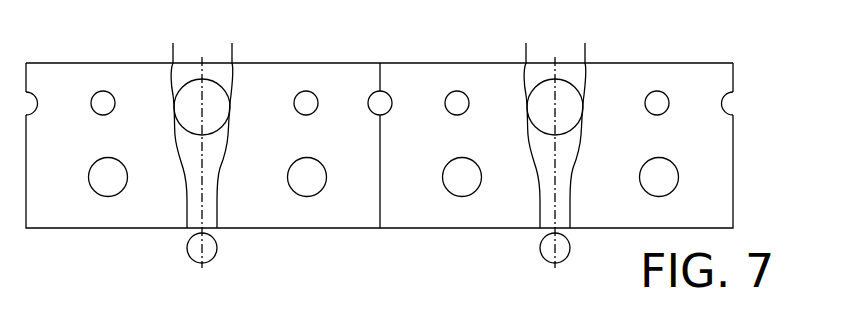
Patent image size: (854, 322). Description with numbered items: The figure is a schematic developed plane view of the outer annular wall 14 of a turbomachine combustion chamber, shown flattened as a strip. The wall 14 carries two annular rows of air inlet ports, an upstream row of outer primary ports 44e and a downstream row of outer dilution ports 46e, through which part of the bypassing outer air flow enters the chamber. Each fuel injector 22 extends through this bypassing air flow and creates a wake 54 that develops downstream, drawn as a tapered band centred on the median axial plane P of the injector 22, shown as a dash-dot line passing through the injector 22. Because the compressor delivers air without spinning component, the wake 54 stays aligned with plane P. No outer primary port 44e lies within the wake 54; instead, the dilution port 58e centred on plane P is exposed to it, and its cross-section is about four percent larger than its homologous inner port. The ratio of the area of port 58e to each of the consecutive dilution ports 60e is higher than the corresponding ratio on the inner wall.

The outer annular wall 14 is at (706, 63).
The outer primary port 44e is at (742, 160).
The outer dilution port 46e is at (729, 104).
The dilution port consecutive to outer dilution port 58e 60e is at (104, 90).
The wake 54 is at (232, 63).
The outer dilution port centred on plane P 58e is at (201, 79).
The fuel injector 22 is at (193, 261).
The median axial plane P is at (203, 268).